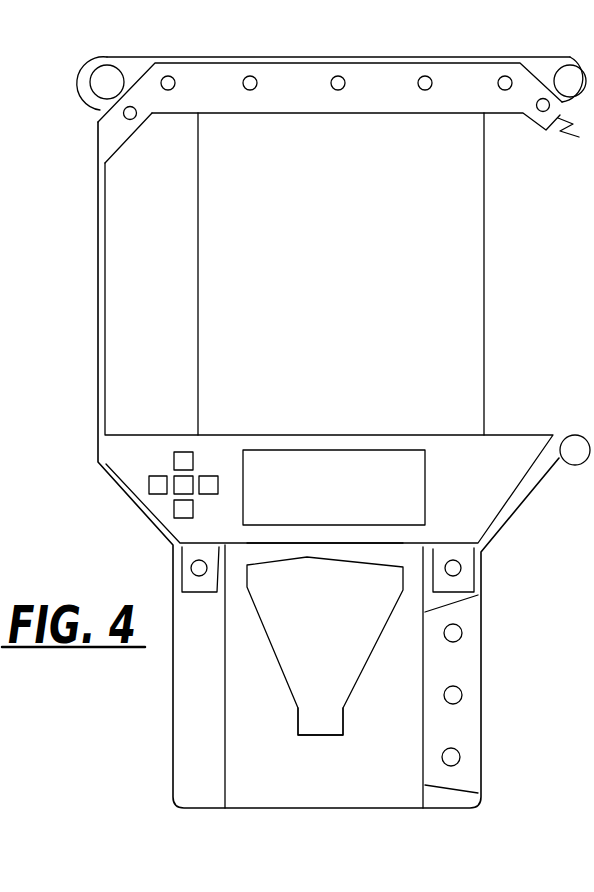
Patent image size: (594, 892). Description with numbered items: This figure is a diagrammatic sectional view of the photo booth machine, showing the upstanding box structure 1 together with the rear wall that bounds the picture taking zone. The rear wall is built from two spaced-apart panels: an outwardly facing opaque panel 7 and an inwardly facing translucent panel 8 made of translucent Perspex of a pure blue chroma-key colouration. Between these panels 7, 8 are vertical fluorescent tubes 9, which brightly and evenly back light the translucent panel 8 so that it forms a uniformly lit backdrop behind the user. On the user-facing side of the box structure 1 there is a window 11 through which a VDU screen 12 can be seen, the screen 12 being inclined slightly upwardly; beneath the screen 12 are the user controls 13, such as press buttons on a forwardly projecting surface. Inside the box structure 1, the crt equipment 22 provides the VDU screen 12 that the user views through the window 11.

The box structure 1 is at (166, 722).
The opaque panel 7 is at (427, 57).
The translucent panel 8 is at (371, 114).
The fluorescent tubes 9 is at (168, 90).
The window 11 is at (297, 548).
The VDU screen 12 is at (353, 556).
The user controls 13 is at (153, 492).
The crt equipment 22 is at (305, 716).